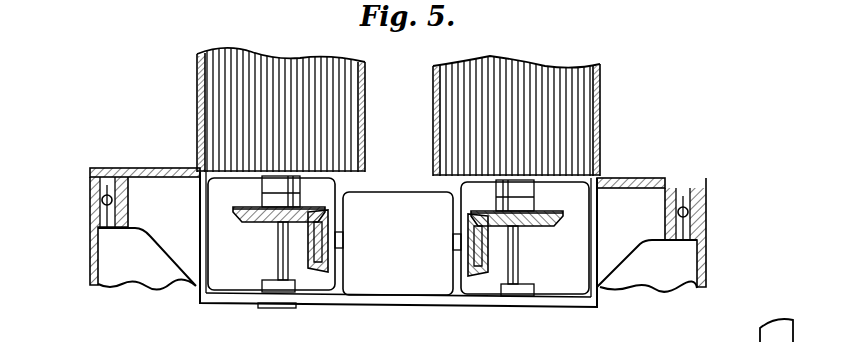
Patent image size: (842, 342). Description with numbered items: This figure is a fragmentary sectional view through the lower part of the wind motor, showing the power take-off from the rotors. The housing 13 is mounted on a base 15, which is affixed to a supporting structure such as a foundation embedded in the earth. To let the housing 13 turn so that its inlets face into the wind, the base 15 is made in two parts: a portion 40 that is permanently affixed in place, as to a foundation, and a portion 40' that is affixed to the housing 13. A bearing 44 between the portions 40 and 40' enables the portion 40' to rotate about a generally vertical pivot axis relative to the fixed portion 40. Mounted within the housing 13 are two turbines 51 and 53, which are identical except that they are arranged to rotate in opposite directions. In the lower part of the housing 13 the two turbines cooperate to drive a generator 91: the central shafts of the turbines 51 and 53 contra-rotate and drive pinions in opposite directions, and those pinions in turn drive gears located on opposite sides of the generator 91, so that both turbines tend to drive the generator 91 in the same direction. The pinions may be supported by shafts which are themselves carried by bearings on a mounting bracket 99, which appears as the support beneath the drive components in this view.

The housing 13 is at (601, 107).
The base 15 is at (116, 166).
The portion of the base 40 is at (104, 226).
The portion of the base 40' is at (63, 204).
The bearing 44 is at (690, 212).
The turbine 51 is at (240, 83).
The turbine 53 is at (546, 80).
The generator 91 is at (397, 205).
The mounting bracket 99 is at (416, 300).